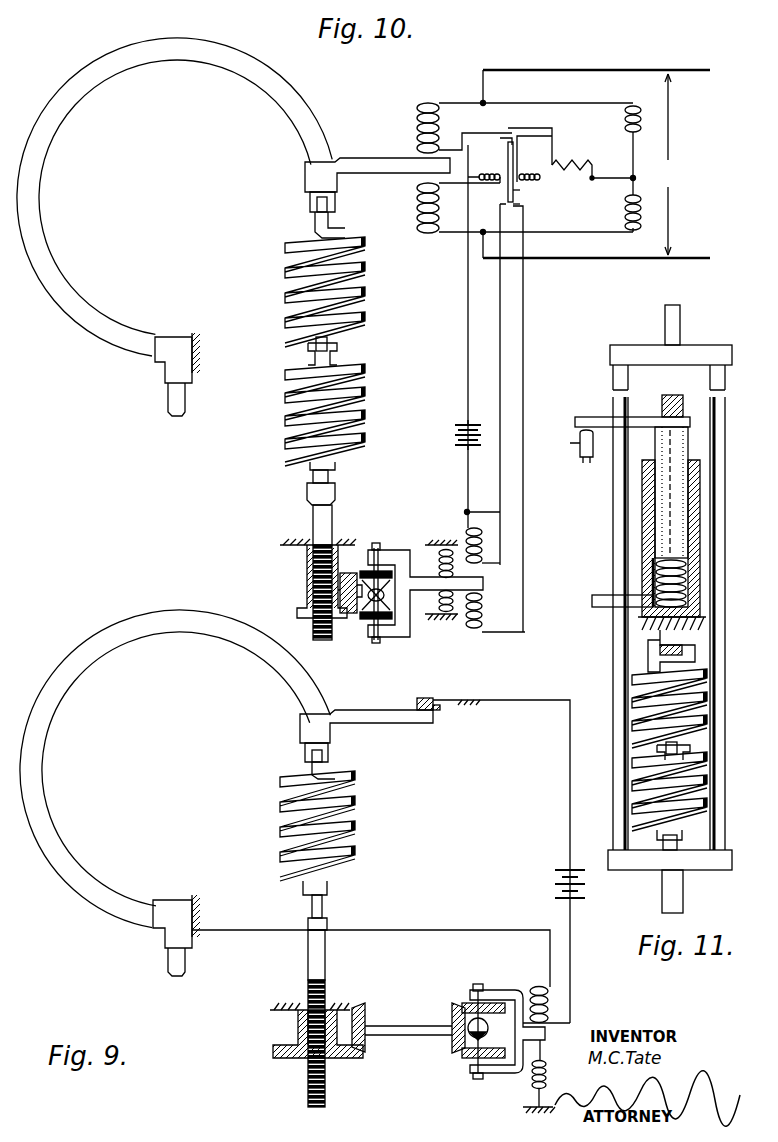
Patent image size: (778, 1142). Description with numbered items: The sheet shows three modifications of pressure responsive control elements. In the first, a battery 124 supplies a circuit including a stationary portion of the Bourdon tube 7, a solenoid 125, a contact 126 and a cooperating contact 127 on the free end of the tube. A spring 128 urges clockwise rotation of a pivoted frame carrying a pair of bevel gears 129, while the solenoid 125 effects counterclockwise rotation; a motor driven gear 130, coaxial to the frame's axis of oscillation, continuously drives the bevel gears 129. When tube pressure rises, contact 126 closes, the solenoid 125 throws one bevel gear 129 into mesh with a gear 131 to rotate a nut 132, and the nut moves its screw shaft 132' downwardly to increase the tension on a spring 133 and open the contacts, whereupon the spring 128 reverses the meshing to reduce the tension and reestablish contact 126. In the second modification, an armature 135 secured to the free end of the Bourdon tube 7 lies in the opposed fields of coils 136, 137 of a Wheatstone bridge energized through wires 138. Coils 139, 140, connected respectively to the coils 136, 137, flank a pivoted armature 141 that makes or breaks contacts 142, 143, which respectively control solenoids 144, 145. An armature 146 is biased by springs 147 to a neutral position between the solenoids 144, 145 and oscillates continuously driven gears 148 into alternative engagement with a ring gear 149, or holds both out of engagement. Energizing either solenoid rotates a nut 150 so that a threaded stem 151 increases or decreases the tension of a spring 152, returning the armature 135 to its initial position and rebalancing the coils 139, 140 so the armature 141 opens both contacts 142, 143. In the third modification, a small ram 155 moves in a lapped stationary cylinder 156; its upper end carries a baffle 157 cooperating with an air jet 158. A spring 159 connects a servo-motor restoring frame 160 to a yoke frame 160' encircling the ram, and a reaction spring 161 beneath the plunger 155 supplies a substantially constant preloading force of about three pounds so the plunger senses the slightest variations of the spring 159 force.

In FIG. 10, the Bourdon tube 7 is at (68, 114).
In FIG. 9, the Bourdon tube 7 is at (44, 738).
In FIG. 10, the armature 135 is at (402, 170).
In FIG. 10, the spring 152 is at (353, 376).
In FIG. 10, the nut 150 is at (312, 592).
In FIG. 10, the threaded stem 151 is at (312, 630).
In FIG. 10, the ring gear 149 is at (349, 613).
In FIG. 10, the gears 148 is at (365, 575).
In FIG. 10, the armature 146 is at (440, 590).
In FIG. 10, the springs 147 is at (440, 565).
In FIG. 10, the solenoid 144 is at (466, 535).
In FIG. 10, the solenoid 145 is at (484, 612).
In FIG. 10, the coil 137 is at (417, 118).
In FIG. 10, the coil 136 is at (420, 210).
In FIG. 10, the wires 138 is at (707, 74).
In FIG. 10, the armature 141 is at (514, 190).
In FIG. 10, the coil 139 is at (490, 182).
In FIG. 10, the coil 140 is at (538, 183).
In FIG. 10, the contact 142 is at (526, 206).
In FIG. 10, the contact 143 is at (500, 207).
In FIG. 9, the contact 126 is at (417, 700).
In FIG. 9, the cooperating contact 127 is at (438, 713).
In FIG. 9, the spring 133 is at (356, 822).
In FIG. 9, the battery 124 is at (555, 888).
In FIG. 9, the screw shaft 132' is at (371, 994).
In FIG. 9, the nut 132 is at (304, 1030).
In FIG. 9, the gear 131 is at (365, 1015).
In FIG. 9, the bevel gears 129 is at (465, 1003).
In FIG. 9, the motor driven gear 130 is at (488, 1030).
In FIG. 9, the solenoid 125 is at (550, 1000).
In FIG. 9, the spring 128 is at (546, 1078).
In FIG. 11, the yoke frame 160' is at (671, 577).
In FIG. 11, the baffle 157 is at (606, 419).
In FIG. 11, the air jet 158 is at (580, 443).
In FIG. 11, the ram 155 is at (660, 513).
In FIG. 11, the stationary cylinder 156 is at (645, 541).
In FIG. 11, the reaction spring 161 is at (656, 583).
In FIG. 11, the servo-motor restoring frame 160 is at (640, 651).
In FIG. 11, the spring 159 is at (640, 692).